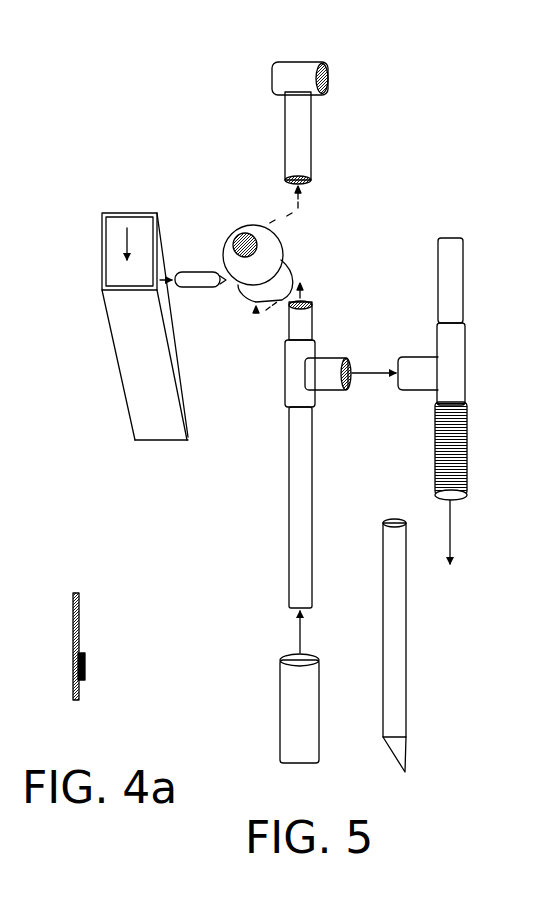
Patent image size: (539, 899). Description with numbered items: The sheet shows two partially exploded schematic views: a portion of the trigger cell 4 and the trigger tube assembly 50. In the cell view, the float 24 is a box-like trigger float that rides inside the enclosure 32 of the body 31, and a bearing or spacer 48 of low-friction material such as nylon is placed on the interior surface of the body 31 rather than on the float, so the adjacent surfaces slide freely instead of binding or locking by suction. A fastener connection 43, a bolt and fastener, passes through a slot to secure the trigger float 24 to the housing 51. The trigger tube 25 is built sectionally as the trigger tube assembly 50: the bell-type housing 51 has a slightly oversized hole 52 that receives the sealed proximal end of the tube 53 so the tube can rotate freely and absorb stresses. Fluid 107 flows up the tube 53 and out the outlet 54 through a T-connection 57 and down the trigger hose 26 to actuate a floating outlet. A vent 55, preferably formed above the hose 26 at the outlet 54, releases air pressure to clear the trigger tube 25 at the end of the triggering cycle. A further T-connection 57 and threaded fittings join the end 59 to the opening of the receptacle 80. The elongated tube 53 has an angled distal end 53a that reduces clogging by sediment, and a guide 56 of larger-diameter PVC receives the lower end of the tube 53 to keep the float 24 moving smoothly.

In FIG. 4a, the apparatus 4 is at (4, 470).
In FIG. 4a, the float 24 is at (135, 378).
In FIG. 5, the trigger tube 25 is at (432, 154).
In FIG. 5, the trigger hose 26 is at (466, 440).
In FIG. 4a, the body 31 is at (72, 643).
In FIG. 4a, the enclosure 32 is at (11, 572).
In FIG. 4a, the fastener connection 43 is at (190, 272).
In FIG. 4a, the bearing or spacer 48 is at (84, 655).
In FIG. 5, the trigger tube assembly 50 is at (230, 576).
In FIG. 5, the housing 51 is at (282, 259).
In FIG. 5, the hole 52 is at (243, 233).
In FIG. 5, the tube 53 is at (312, 135).
In FIG. 5, the distal end 53a is at (403, 748).
In FIG. 5, the outlet 54 is at (352, 366).
In FIG. 5, the vent 55 is at (450, 298).
In FIG. 5, the guide 56 is at (300, 740).
In FIG. 5, the T-connection 57 is at (328, 74).
In FIG. 5, the end 59 is at (312, 302).
In FIG. 5, the receptacle 80 is at (300, 190).
In FIG. 5, the fluid 107 is at (362, 375).